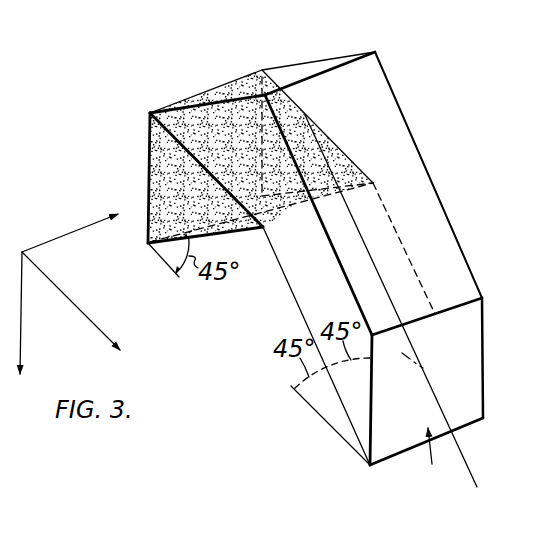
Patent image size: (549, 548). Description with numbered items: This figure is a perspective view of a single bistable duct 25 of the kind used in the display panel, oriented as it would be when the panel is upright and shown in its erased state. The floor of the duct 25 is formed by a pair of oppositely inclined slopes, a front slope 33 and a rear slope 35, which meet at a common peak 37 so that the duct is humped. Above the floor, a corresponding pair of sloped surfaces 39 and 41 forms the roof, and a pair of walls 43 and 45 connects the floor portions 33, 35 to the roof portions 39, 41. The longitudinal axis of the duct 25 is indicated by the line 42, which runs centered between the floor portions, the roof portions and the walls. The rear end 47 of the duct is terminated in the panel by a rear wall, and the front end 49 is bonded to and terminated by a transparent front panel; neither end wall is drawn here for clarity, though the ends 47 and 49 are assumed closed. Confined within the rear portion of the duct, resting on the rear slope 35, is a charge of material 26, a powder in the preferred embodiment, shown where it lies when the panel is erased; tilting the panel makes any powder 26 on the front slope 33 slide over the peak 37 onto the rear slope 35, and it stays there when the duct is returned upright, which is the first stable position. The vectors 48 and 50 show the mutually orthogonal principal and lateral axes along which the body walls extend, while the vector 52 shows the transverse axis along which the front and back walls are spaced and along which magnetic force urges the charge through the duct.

The bistable duct 25 is at (410, 93).
The charge of powder 26 is at (307, 117).
The front slope 33 is at (463, 419).
The rear slope 35 is at (231, 231).
The peak 37 is at (373, 183).
The roof sloped surface 39 is at (445, 244).
The roof sloped surface 41 is at (332, 62).
The longitudinal axis line 42 is at (400, 368).
The duct wall 43 is at (373, 416).
The duct wall 45 is at (472, 333).
The rear end of duct 47 is at (159, 118).
The principal axis vector 48 is at (23, 333).
The front end of duct 49 is at (427, 463).
The lateral axis vector 50 is at (72, 230).
The transverse axis vector 52 is at (73, 302).